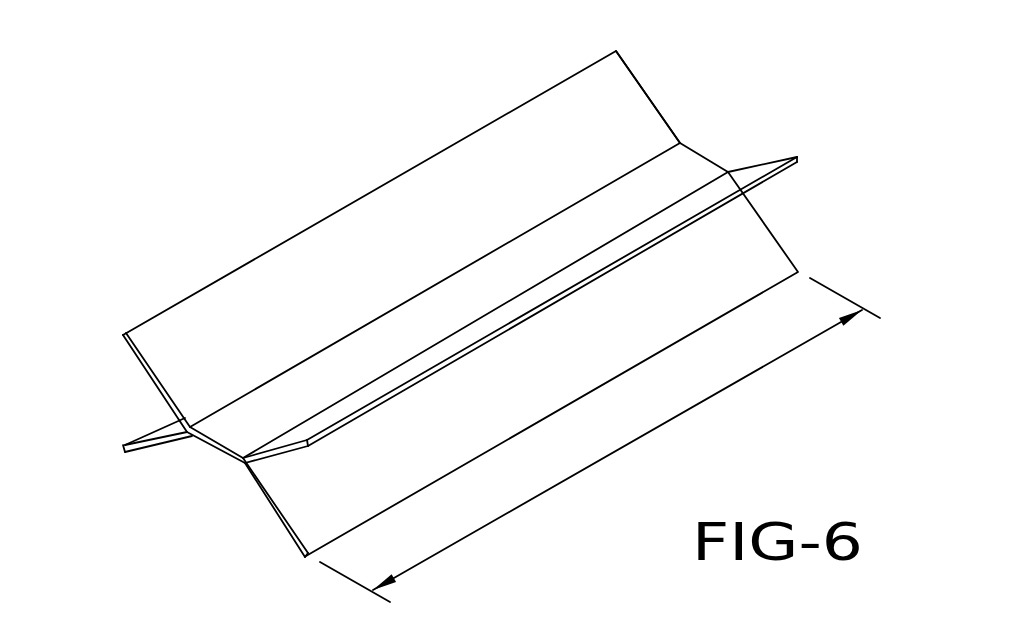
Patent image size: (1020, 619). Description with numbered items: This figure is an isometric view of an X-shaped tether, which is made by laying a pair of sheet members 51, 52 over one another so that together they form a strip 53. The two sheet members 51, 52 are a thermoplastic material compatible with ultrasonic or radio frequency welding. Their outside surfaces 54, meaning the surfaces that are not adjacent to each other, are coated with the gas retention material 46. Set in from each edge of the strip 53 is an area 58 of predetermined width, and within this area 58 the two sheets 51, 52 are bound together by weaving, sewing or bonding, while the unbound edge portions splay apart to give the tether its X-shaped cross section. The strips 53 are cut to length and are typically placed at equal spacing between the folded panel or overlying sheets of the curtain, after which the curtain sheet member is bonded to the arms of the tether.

The gas retention material 46 is at (410, 215).
The sheet member 51 is at (258, 235).
The sheet member 52 is at (242, 506).
The strip 53 is at (682, 413).
The outside surfaces 54 is at (625, 95).
The area 58 is at (680, 163).